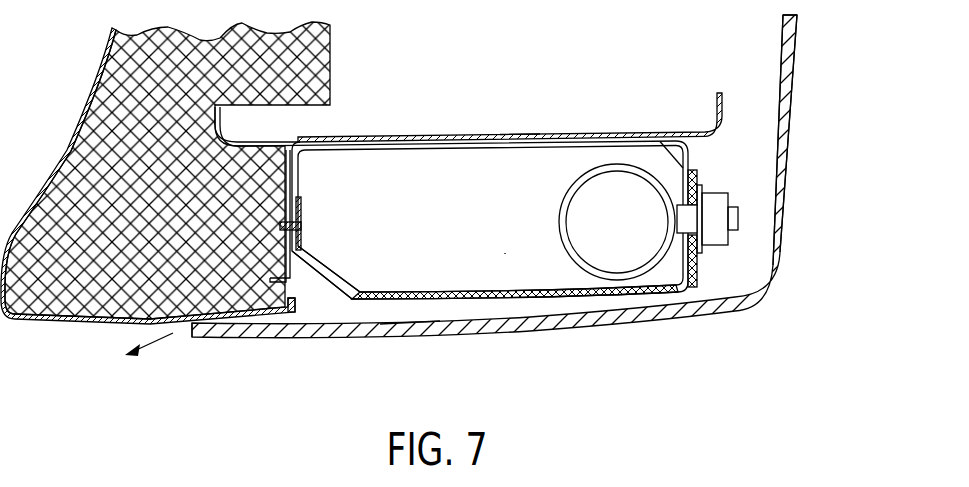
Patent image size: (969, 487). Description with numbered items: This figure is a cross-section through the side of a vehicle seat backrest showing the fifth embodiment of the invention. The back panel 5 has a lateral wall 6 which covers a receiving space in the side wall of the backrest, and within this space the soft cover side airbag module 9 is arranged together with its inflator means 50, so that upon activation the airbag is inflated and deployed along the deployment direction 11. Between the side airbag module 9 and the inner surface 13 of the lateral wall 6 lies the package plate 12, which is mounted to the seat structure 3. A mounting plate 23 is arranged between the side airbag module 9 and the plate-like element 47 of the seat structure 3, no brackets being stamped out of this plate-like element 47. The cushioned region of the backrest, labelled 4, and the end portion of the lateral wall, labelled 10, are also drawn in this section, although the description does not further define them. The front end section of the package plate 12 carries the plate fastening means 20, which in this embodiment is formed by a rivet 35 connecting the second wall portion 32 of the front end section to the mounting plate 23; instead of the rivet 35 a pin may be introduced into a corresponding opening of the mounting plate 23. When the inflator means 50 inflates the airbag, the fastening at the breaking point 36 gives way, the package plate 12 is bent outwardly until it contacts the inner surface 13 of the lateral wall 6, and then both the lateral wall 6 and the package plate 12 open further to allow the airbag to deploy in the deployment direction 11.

The seat structure 3 is at (522, 104).
The foam absorber block 4 is at (80, 322).
The back panel 5 is at (810, 103).
The lateral wall 6 is at (483, 328).
The soft cover side airbag module (SAM) 9 is at (505, 253).
The cover end portion 10 is at (190, 337).
The deployment direction 11 is at (160, 352).
The package plate 12 is at (640, 292).
The inner surface 13 is at (418, 318).
The plate fastening means 20 is at (262, 240).
The mounting plate 23 is at (548, 142).
The second wall portion 32 is at (303, 218).
The rivet 35 is at (322, 218).
The breaking point 36 is at (332, 263).
The plate-like element 47 is at (490, 133).
The inflator means 50 is at (605, 163).